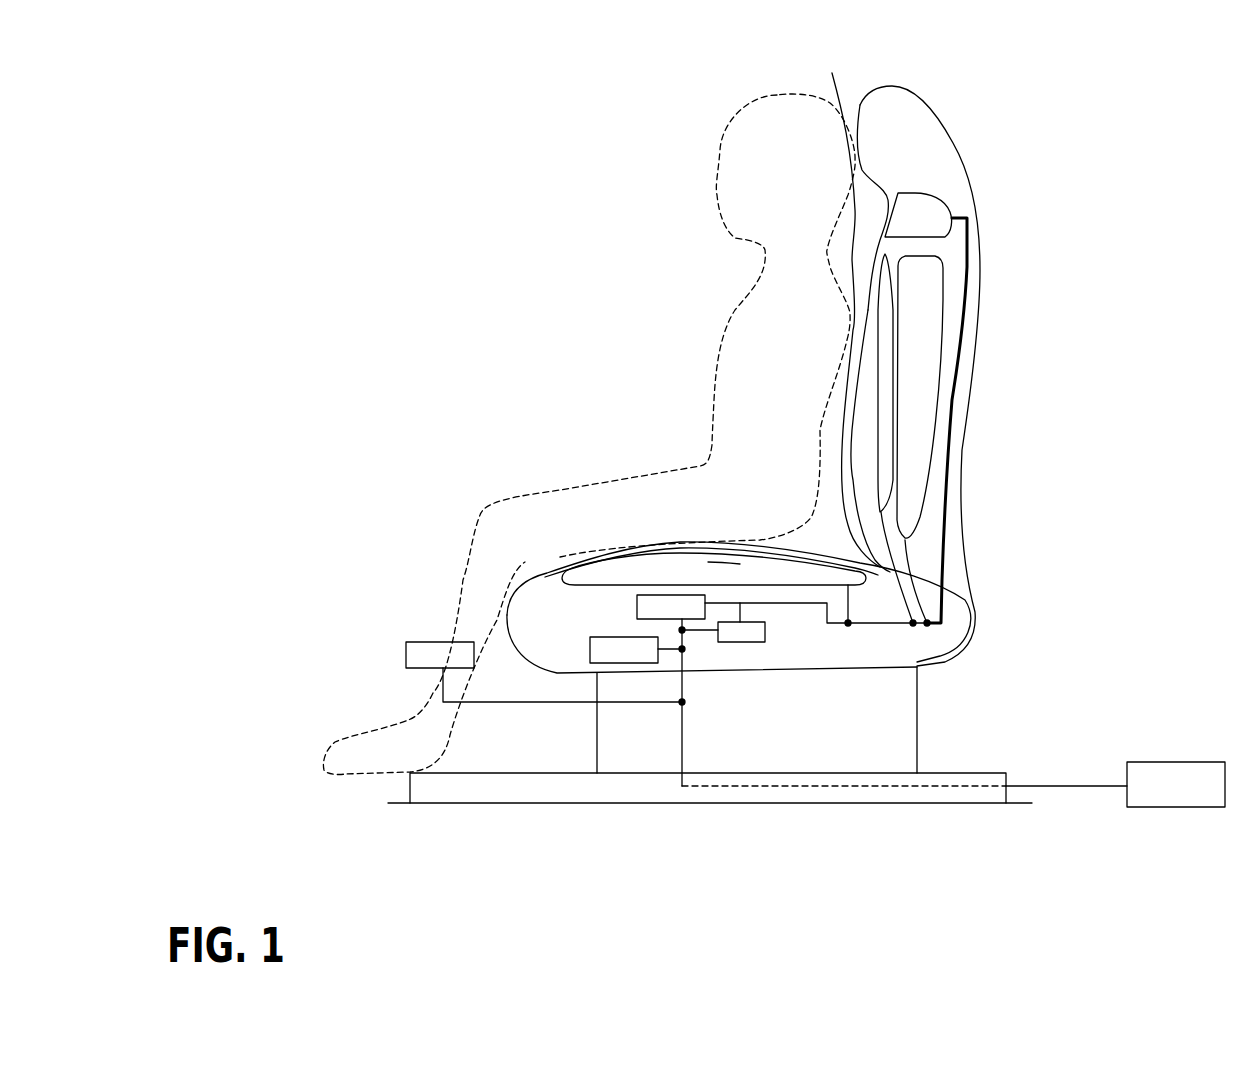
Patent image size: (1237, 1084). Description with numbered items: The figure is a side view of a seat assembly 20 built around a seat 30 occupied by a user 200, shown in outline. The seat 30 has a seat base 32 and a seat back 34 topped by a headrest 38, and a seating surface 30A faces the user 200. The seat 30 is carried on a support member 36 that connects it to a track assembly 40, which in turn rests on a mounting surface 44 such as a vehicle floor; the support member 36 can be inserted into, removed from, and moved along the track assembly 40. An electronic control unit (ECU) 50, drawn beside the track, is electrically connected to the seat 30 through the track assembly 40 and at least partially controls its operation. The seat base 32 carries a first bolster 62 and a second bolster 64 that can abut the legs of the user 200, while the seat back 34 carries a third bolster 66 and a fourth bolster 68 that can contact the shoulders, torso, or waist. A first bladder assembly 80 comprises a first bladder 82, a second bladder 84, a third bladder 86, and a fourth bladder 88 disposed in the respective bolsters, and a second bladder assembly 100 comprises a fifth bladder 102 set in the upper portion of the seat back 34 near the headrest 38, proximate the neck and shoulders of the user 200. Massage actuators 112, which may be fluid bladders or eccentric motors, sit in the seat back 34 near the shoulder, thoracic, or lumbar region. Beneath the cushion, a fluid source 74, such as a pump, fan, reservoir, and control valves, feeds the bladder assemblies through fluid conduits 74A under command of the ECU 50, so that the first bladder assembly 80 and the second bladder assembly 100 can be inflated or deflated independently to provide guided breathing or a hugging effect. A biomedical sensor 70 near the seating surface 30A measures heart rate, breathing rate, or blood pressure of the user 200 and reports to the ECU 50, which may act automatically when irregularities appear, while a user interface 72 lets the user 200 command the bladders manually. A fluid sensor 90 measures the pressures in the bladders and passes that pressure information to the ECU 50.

The seat assembly 20 is at (917, 448).
The seat 30 is at (769, 355).
The seating surface 30A is at (832, 73).
The seat base 32 is at (543, 583).
The seat back 34 is at (970, 367).
The support member 36 is at (917, 730).
The headrest 38 is at (922, 120).
The track assembly 40 is at (973, 773).
The mounting surface 44 is at (400, 803).
The electronic control unit (ECU) 50 is at (1148, 762).
The first bolster 62 is at (694, 514).
The second bolster 64 is at (668, 547).
The third bolster 66 is at (782, 438).
The fourth bolster 68 is at (895, 438).
The biomedical sensor 70 is at (590, 642).
The user interface 72 is at (443, 642).
The fluid source 74 is at (508, 600).
The fluid conduit 74A is at (900, 645).
The first bladder assembly 80 is at (848, 479).
The first bladder 82 is at (675, 482).
The second bladder 84 is at (708, 562).
The third bladder 86 is at (855, 394).
The fourth bladder 88 is at (757, 441).
The fluid sensor 90 is at (750, 642).
The second bladder assembly 100 is at (982, 373).
The fifth bladder 102 is at (935, 212).
The massage actuator 112 is at (955, 295).
The user 200 is at (718, 131).